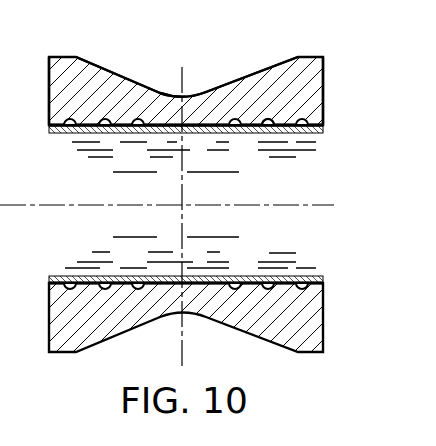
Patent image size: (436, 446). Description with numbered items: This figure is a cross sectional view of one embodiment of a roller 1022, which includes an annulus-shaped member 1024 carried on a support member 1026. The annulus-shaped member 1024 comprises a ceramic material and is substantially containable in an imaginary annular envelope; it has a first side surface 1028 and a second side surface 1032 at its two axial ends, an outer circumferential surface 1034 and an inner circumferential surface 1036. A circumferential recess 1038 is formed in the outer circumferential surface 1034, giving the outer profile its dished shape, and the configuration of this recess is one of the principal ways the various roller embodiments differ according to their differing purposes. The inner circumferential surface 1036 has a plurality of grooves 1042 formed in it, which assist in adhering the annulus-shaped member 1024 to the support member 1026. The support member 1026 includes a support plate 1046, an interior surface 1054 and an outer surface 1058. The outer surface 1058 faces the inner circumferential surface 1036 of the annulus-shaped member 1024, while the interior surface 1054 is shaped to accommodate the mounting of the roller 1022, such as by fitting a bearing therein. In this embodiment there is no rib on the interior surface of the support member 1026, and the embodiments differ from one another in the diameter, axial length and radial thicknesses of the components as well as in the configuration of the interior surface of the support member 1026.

The roller 1022 is at (77, 37).
The annulus-shaped member 1024 is at (298, 70).
The support member 1026 is at (316, 128).
The first side surface 1028 is at (0, 64).
The second side surface 1032 is at (323, 93).
The outer circumferential surface 1034 is at (289, 60).
The inner circumferential surface 1036 is at (268, 124).
The circumferential recess 1038 is at (210, 93).
The grooves 1042 is at (288, 128).
The support plate 1046 is at (66, 125).
The interior surface 1054 is at (301, 275).
The outer surface 1058 is at (314, 290).